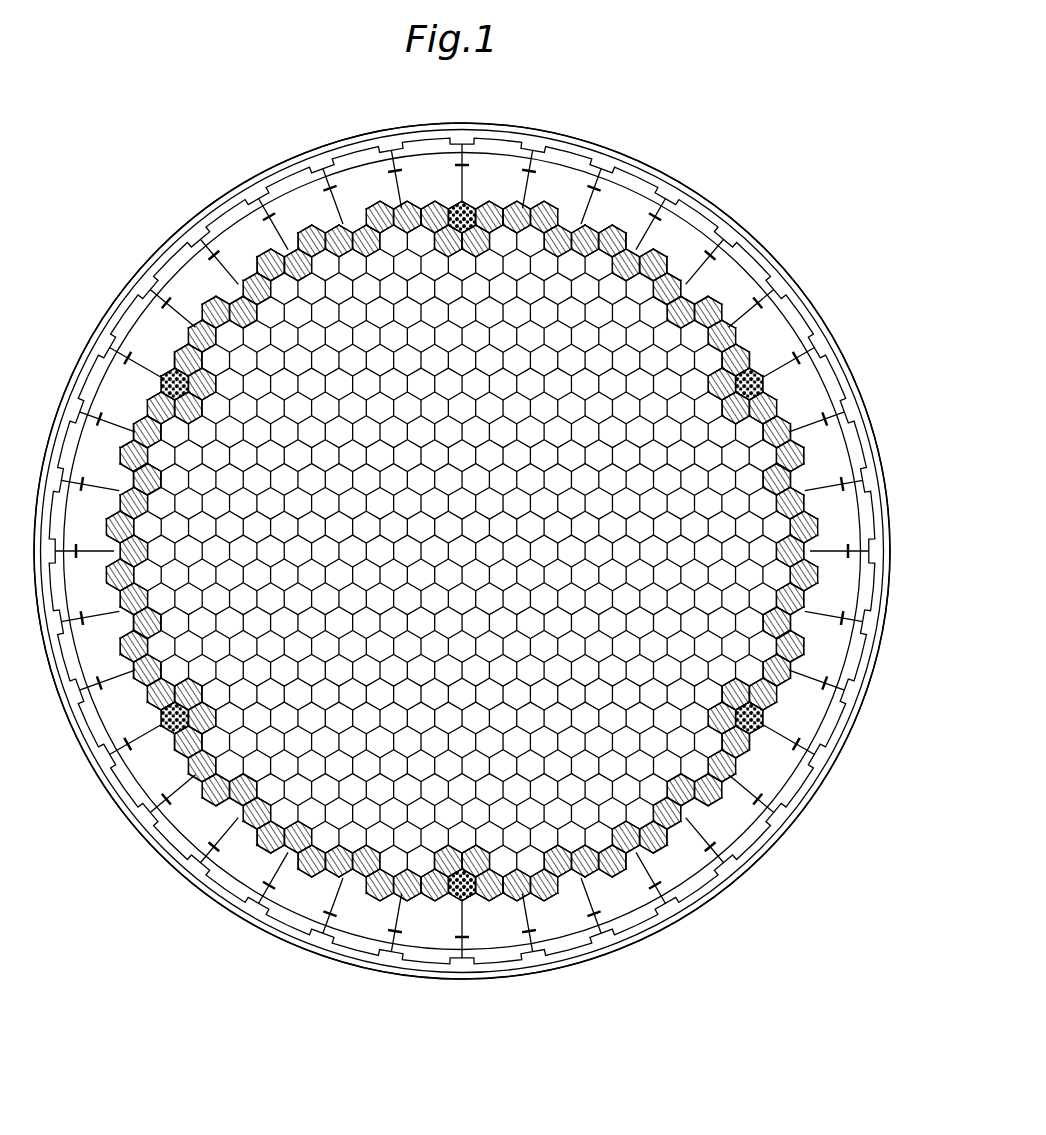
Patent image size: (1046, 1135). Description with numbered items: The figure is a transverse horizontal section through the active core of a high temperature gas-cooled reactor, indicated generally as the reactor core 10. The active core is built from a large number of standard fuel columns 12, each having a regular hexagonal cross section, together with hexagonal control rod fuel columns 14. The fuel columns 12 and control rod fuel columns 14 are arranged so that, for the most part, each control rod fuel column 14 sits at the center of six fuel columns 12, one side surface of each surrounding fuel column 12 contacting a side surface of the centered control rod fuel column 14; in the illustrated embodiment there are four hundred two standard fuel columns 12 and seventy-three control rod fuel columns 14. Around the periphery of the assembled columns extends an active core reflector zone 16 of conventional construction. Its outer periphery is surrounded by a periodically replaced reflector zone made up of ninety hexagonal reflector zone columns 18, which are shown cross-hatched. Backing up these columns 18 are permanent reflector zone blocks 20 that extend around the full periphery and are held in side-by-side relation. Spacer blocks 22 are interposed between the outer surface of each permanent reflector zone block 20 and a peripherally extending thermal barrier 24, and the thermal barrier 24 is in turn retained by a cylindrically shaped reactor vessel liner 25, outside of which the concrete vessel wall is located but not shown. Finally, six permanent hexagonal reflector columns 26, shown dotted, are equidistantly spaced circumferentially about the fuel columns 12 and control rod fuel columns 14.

The reactor core 10 is at (775, 205).
The fuel column 12 is at (482, 433).
The control rod fuel column 14 is at (482, 551).
The active core reflector zone 16 is at (207, 302).
The reflector zone column 18 is at (563, 898).
The permanent reflector zone block 20 is at (677, 220).
The spacer block 22 is at (342, 153).
The thermal barrier 24 is at (818, 347).
The reactor vessel liner 25 is at (870, 458).
The permanent reflector column 26 is at (455, 206).